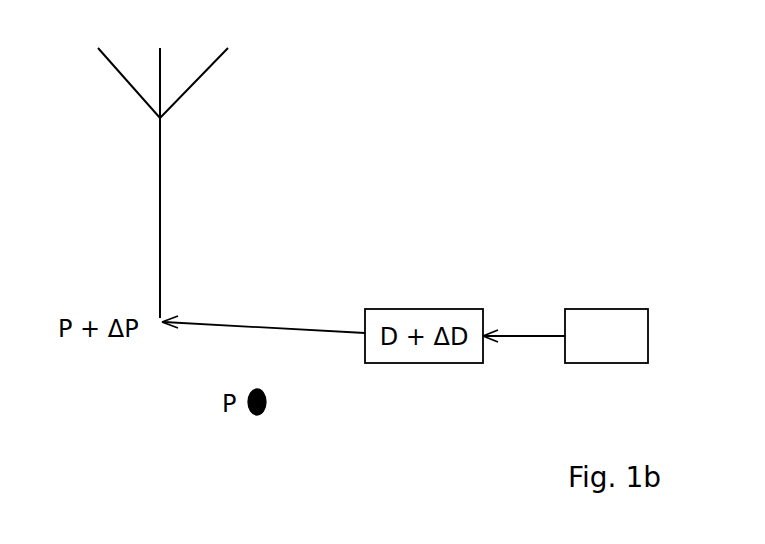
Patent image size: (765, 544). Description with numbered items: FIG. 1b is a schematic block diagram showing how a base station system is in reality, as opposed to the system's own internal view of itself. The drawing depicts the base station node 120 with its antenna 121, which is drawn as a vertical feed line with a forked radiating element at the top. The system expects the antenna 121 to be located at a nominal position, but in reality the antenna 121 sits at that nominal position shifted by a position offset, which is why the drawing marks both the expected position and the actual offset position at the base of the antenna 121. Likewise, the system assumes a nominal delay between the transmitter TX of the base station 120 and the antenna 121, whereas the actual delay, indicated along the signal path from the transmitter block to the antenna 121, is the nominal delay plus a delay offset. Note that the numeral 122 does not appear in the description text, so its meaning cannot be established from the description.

The base station node 120 is at (291, 183).
The antenna 121 is at (200, 183).
The transmitter TX block (unlabeled in drawing) 122 is at (606, 336).